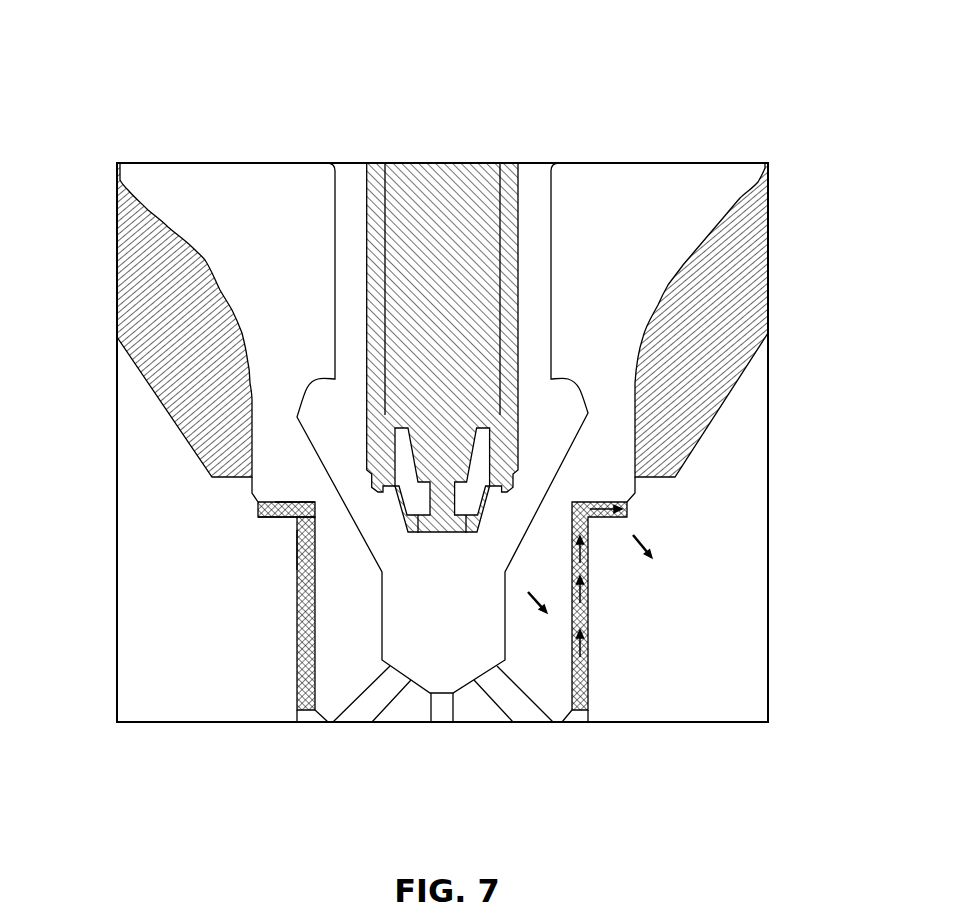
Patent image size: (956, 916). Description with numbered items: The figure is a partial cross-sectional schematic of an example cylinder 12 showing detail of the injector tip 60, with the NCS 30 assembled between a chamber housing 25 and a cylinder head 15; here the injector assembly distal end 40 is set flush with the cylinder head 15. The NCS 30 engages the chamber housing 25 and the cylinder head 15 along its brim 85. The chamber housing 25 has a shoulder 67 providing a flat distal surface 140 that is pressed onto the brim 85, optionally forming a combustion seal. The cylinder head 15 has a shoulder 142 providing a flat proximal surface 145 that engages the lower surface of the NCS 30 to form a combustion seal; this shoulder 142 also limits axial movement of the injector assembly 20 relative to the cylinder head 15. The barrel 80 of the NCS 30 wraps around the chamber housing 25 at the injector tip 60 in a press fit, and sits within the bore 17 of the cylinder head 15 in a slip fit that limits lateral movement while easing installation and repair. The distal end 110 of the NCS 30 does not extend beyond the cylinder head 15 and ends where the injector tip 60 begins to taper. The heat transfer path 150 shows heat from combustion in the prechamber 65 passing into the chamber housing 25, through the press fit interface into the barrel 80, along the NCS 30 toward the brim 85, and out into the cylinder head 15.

The cylinder 12 is at (137, 93).
The injector assembly 20 is at (263, 162).
The chamber housing 25 is at (193, 221).
The cylinder head 15 is at (735, 632).
The prechamber 65 is at (477, 620).
The injector assembly distal end 40 is at (412, 724).
The injector tip 60 is at (548, 653).
The NCS 30 is at (297, 635).
The barrel 80 is at (297, 675).
The distal surface 140 is at (270, 502).
The brim 85 is at (285, 500).
The shoulder 67 is at (265, 462).
The proximal surface 145 is at (272, 520).
The shoulder 142 is at (275, 550).
The bore 17 is at (588, 635).
The distal end 110 is at (578, 722).
The heat transfer path 150 is at (652, 537).